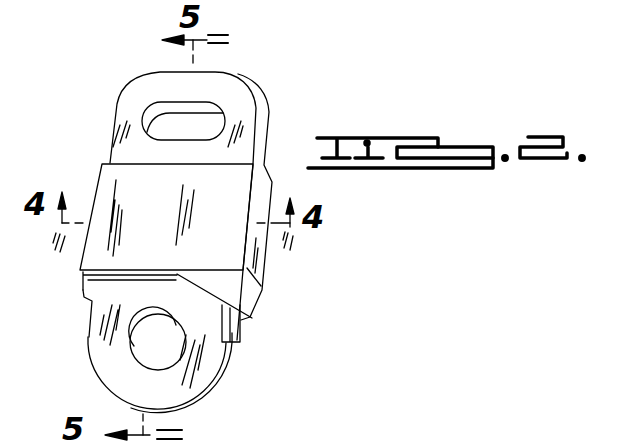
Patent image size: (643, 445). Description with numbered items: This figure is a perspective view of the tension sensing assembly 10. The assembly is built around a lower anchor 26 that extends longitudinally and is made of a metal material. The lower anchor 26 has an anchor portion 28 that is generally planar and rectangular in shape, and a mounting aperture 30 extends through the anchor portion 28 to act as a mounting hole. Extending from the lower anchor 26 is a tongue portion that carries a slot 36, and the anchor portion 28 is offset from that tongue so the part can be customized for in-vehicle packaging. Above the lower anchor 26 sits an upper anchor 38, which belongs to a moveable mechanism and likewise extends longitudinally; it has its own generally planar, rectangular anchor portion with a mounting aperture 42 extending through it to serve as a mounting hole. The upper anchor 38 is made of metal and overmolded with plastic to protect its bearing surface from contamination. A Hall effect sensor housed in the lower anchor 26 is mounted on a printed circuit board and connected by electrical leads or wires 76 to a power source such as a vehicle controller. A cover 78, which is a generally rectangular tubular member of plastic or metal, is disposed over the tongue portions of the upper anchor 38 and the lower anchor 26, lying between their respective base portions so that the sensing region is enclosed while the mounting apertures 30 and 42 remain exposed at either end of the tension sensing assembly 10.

The tension sensing assembly 10 is at (97, 111).
The lower anchor 26 is at (90, 318).
The anchor portion 28 is at (205, 368).
The mounting aperture 30 is at (138, 337).
The slot 36 is at (268, 118).
The upper anchor 38 is at (236, 88).
The mounting aperture 42 is at (172, 120).
The electrical leads or wires 76 is at (232, 332).
The cover 78 is at (231, 254).